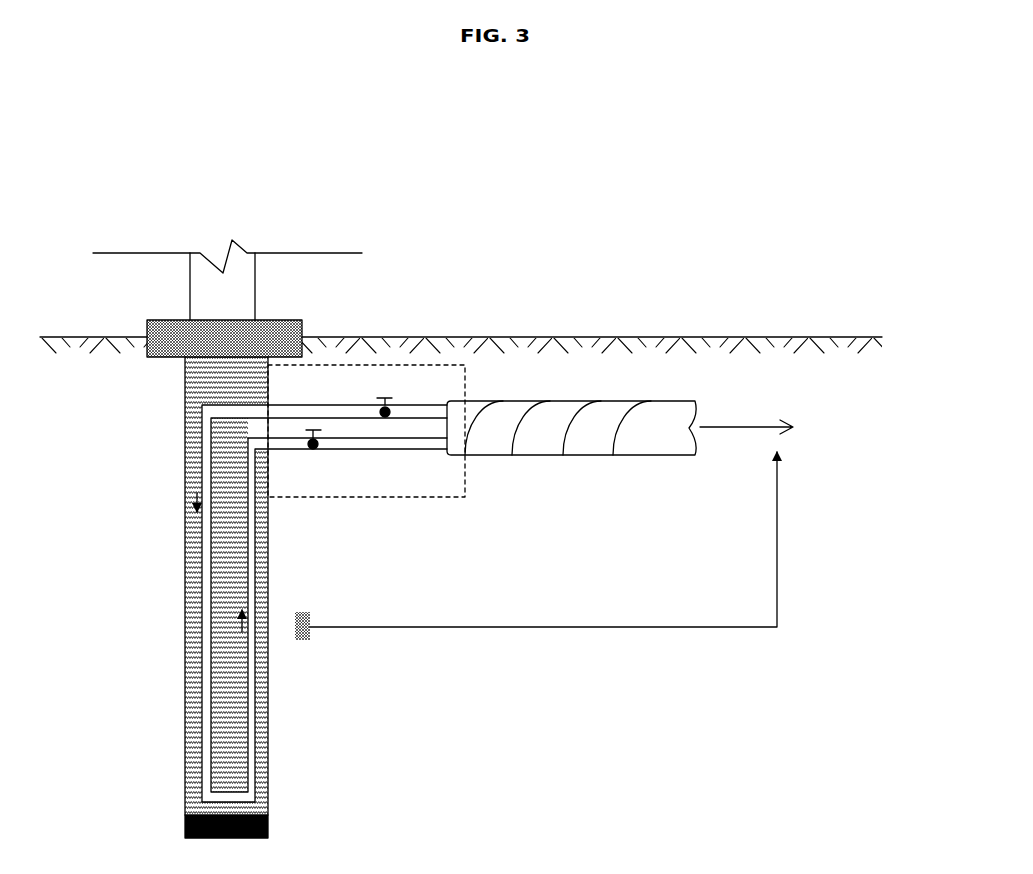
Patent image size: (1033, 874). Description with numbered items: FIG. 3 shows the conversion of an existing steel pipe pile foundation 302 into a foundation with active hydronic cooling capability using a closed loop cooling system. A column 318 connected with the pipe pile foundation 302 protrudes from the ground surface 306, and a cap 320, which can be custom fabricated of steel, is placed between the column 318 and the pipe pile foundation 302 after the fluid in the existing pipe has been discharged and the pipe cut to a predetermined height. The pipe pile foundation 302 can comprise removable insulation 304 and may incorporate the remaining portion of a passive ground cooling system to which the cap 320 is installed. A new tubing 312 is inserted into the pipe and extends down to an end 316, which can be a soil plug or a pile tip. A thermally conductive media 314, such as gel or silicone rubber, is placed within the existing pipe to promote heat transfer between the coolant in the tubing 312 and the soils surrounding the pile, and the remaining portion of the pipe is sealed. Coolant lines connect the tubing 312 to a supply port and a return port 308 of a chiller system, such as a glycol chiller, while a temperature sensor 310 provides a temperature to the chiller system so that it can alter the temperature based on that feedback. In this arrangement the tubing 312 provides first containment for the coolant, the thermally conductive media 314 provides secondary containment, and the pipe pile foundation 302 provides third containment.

The pipe pile foundation 302 is at (279, 377).
The removable insulation 304 is at (394, 362).
The ground surface 306 is at (763, 333).
The return port 308 is at (643, 428).
The temperature sensor 310 is at (567, 546).
The tubing 312 is at (258, 555).
The thermally conductive media 314 is at (233, 735).
The end 316 is at (271, 826).
The column 318 is at (187, 282).
The cap 320 is at (153, 368).